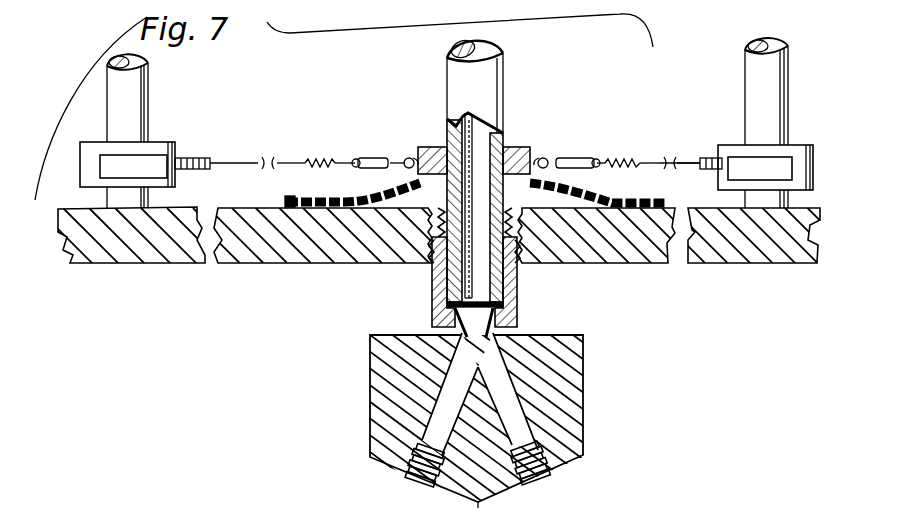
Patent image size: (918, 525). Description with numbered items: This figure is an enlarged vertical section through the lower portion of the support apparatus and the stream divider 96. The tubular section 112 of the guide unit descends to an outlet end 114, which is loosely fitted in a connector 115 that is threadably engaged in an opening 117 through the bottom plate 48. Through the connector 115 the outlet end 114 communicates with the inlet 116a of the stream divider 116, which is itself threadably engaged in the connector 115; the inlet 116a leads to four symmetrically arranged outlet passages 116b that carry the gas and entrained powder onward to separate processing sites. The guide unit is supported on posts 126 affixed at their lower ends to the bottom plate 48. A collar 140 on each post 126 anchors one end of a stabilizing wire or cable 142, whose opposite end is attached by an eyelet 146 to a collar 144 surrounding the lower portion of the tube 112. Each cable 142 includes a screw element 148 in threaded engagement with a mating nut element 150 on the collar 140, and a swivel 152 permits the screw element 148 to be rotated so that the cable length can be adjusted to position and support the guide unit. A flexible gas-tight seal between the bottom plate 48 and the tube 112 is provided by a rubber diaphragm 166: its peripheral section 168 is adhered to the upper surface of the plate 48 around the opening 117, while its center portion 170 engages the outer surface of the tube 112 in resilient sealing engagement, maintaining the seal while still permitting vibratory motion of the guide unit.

The bottom plate 48 is at (770, 265).
The nozzle assembly 96 is at (494, 513).
The tubular section 112 is at (500, 72).
The outlet end 114 is at (470, 279).
The connector 115 is at (517, 297).
The stream divider 116 is at (585, 362).
The inlet 116a is at (505, 327).
The outlet passages 116b is at (440, 417).
The opening 117 is at (512, 222).
The posts 126 is at (145, 88).
The collar 140 is at (150, 140).
The stabilizing wires or cables 142 is at (296, 162).
The collar 144 is at (528, 146).
The eyelets 146 is at (408, 157).
The screw element 148 is at (192, 160).
The nut element 150 is at (153, 163).
The swivel 152 is at (372, 158).
The rubber diaphragm 166 is at (370, 198).
The peripheral section 168 is at (288, 200).
The center portion 170 is at (352, 252).